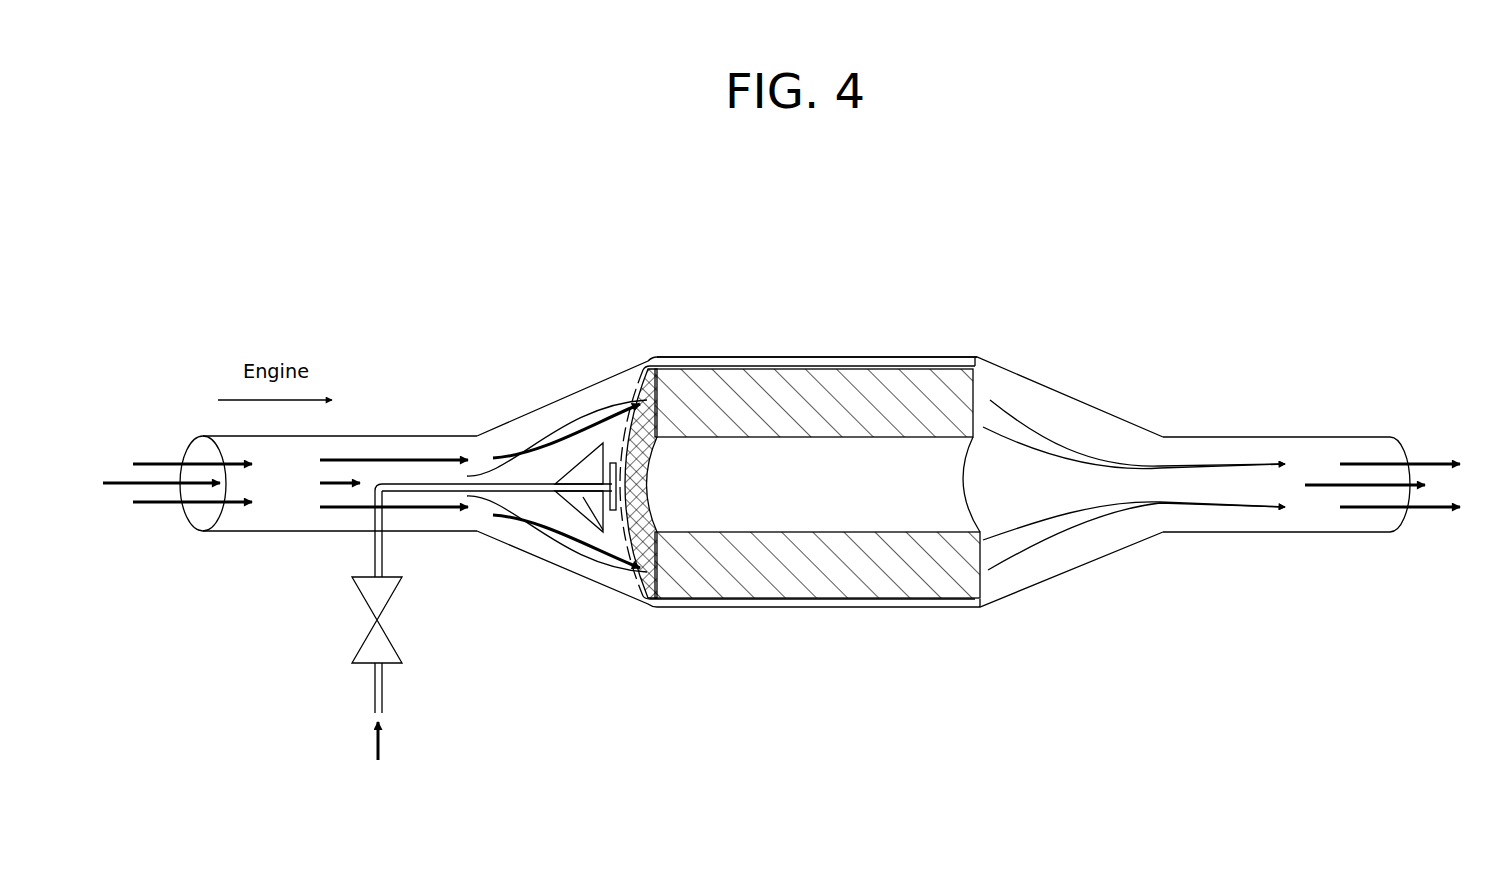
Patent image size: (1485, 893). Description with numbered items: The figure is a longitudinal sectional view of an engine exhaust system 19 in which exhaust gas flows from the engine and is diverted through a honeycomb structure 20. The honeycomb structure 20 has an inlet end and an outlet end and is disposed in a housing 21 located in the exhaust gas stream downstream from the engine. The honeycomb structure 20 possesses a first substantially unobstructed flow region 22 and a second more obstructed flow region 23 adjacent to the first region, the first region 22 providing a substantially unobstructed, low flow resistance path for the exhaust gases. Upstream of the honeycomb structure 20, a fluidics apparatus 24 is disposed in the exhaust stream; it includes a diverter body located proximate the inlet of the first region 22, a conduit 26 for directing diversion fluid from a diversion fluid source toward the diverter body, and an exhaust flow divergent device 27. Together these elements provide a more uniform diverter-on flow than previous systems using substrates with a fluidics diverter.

The engine exhaust system 19 is at (912, 646).
The honeycomb structure 20 is at (918, 370).
The housing 21 is at (744, 352).
The first substantially unobstructed flow region 22 is at (935, 480).
The second more obstructed flow region 23 is at (820, 378).
The fluidics apparatus 24 is at (550, 500).
The conduit 26 is at (373, 550).
The exhaust flow divergent device 27 is at (588, 500).